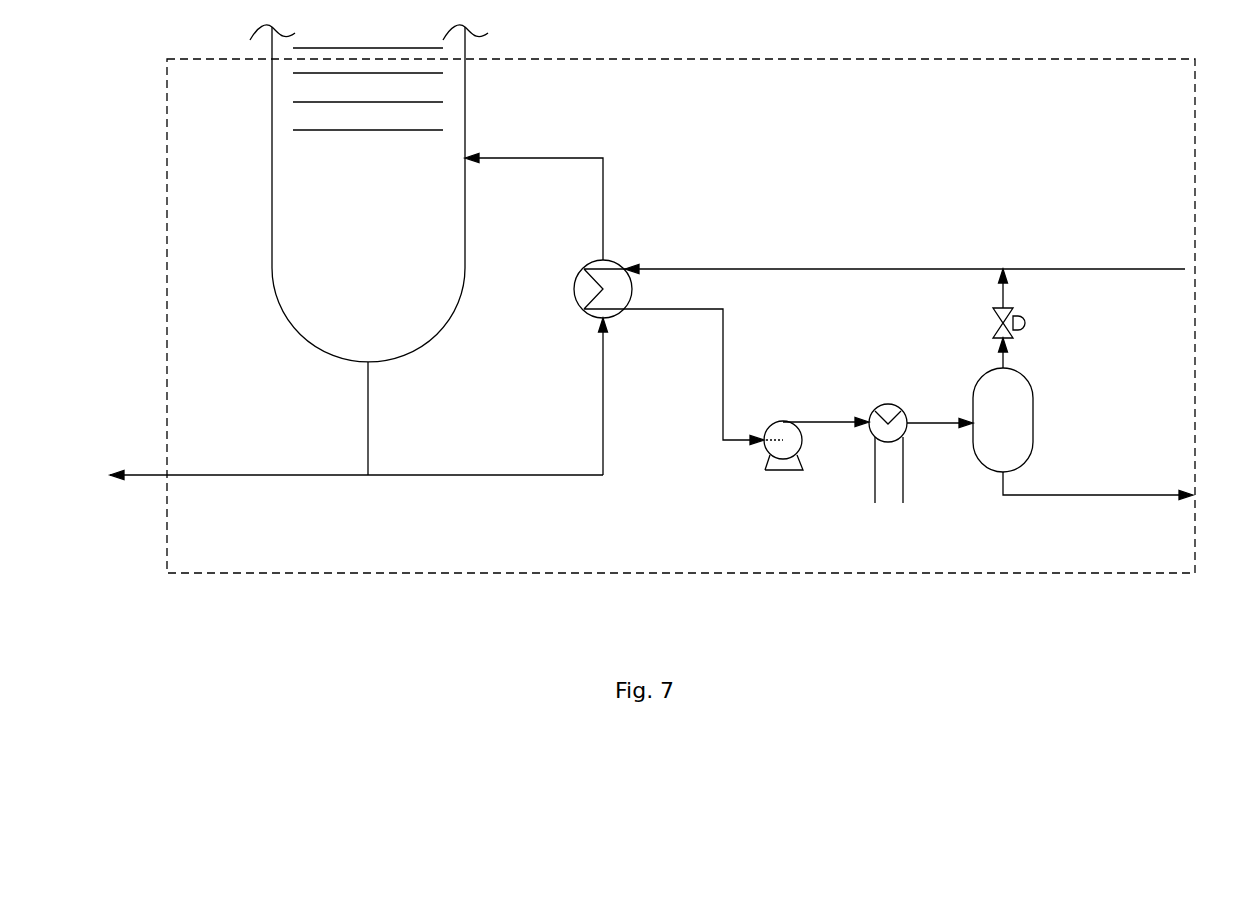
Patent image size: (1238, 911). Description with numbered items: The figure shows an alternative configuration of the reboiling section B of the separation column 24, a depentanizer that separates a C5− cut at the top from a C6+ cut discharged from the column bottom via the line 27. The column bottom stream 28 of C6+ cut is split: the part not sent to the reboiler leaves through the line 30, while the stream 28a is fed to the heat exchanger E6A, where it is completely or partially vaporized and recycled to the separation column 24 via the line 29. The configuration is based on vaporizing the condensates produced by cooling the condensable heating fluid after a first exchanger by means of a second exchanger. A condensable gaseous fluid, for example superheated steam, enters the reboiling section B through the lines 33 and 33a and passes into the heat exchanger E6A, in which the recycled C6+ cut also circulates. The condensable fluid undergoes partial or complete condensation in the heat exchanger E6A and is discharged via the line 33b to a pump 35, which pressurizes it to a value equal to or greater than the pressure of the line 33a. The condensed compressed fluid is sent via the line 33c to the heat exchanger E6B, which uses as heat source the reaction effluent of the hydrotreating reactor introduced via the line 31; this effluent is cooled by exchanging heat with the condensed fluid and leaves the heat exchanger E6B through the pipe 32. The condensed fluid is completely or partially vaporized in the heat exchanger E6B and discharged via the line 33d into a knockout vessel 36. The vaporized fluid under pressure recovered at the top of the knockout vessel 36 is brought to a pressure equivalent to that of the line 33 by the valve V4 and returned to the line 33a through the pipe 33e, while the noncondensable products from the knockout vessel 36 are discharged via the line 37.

The reboiling section B is at (987, 59).
The separation column 24 is at (465, 113).
The line 27 is at (368, 405).
The column bottom stream C6+ 28 is at (448, 475).
The stream 28a is at (603, 418).
The line 29 is at (525, 158).
The line 30 is at (247, 475).
The line 31 is at (903, 490).
The pipe 32 is at (875, 497).
The line 33 is at (1163, 269).
The line 33a is at (686, 269).
The line 33b is at (690, 309).
The line 33c is at (825, 422).
The line 33d is at (932, 422).
The pipe 33e is at (1003, 300).
The pump 35 is at (771, 421).
The knockout vessel 36 is at (1033, 420).
The line 37 is at (1110, 495).
The heat exchanger E6A is at (576, 289).
The heat exchanger E6B is at (888, 404).
The valve V4 is at (993, 323).